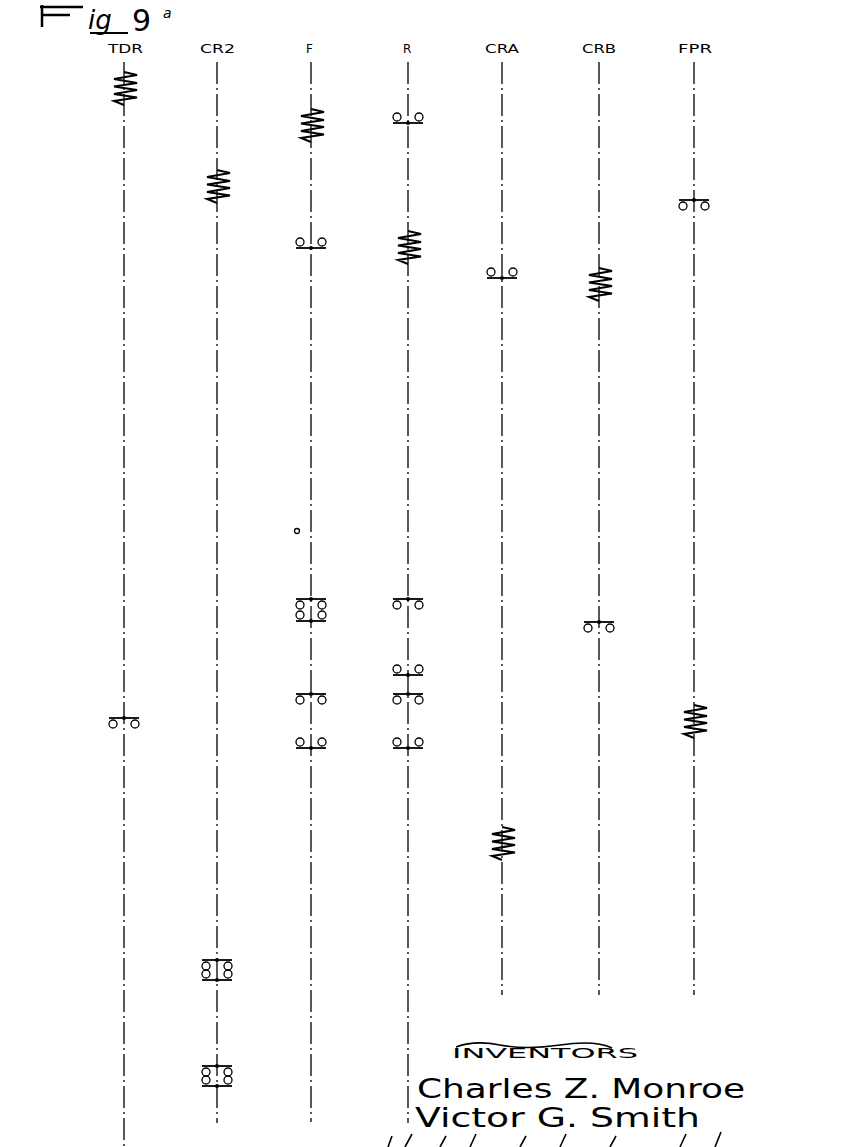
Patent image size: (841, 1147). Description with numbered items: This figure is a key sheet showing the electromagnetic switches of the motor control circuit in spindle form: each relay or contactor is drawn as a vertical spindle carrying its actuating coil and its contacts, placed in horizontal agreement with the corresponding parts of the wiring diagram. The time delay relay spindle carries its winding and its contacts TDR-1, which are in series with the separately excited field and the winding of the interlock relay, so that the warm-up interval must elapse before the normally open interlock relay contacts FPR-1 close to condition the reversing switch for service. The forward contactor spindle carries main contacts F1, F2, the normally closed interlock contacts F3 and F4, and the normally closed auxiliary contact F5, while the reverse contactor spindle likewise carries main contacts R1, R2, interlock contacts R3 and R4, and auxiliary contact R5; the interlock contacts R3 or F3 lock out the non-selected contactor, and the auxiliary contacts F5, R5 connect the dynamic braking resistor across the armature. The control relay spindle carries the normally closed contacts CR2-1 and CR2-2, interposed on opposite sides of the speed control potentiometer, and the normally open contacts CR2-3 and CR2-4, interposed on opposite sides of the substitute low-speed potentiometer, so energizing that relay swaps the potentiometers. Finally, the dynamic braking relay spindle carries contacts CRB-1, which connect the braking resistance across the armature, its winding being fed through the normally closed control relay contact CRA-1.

The normally closed interlock contact R3 is at (413, 116).
The normally closed interlock contact F3 is at (321, 245).
The normally closed contact of control relay CRA CRA-1 is at (510, 274).
The normally open contacts of interlock relay FPR FPR-1 is at (703, 206).
The main contact of forward contactor F1 is at (303, 593).
The normally closed auxiliary contact of forward contactor F5 is at (304, 627).
The main contact of forward contactor F2 is at (307, 699).
The normally closed interlock contact F4 is at (306, 758).
The main contact of reverse contactor R2 is at (416, 598).
The normally closed auxiliary contact of reverse contactor R5 is at (419, 677).
The main contact of reverse contactor R1 is at (428, 701).
The normally closed interlock contact R4 is at (421, 745).
The contacts of time delay relay TDR-1 is at (118, 716).
The contacts of dynamic braking relay CRB-1 is at (630, 618).
The normally open contact of control relay CR2 CR2-4 is at (229, 957).
The normally closed contact of control relay CR2 CR2-2 is at (230, 986).
The normally open contact of control relay CR2 CR2-3 is at (230, 1064).
The normally closed contact of control relay CR2 CR2-1 is at (230, 1097).